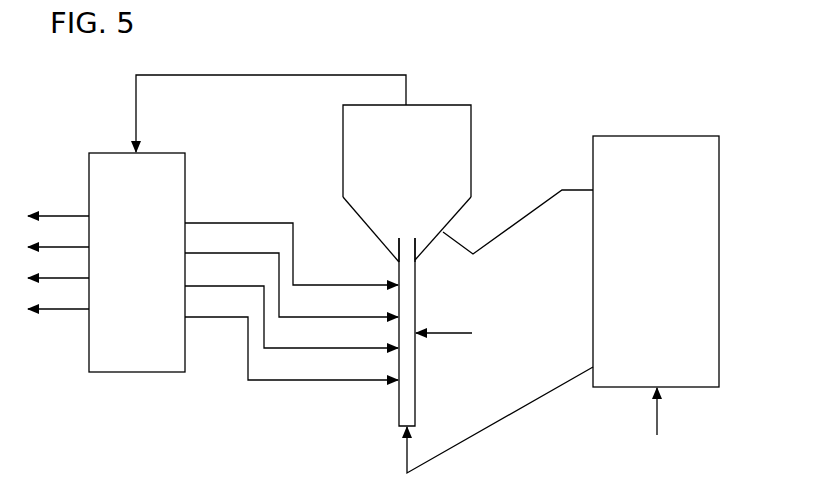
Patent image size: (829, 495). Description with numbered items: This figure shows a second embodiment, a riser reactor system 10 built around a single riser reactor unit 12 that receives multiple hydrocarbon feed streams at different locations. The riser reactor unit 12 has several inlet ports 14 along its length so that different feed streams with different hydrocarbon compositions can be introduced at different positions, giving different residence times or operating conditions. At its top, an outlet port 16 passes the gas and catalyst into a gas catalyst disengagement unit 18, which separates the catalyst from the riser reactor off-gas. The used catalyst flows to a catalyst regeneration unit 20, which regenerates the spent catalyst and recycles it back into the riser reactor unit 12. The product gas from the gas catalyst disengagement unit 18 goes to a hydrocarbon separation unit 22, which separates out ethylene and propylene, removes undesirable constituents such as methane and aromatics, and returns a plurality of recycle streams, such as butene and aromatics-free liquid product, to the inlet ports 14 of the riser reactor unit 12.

The riser reactor system 10 is at (739, 134).
The riser reactor unit 12 is at (416, 348).
The inlet ports 14 is at (393, 350).
The outlet port 16 is at (410, 236).
The gas catalyst disengagement unit 18 is at (457, 137).
The catalyst regeneration unit 20 is at (656, 285).
The hydrocarbon separation unit 22 is at (217, 223).